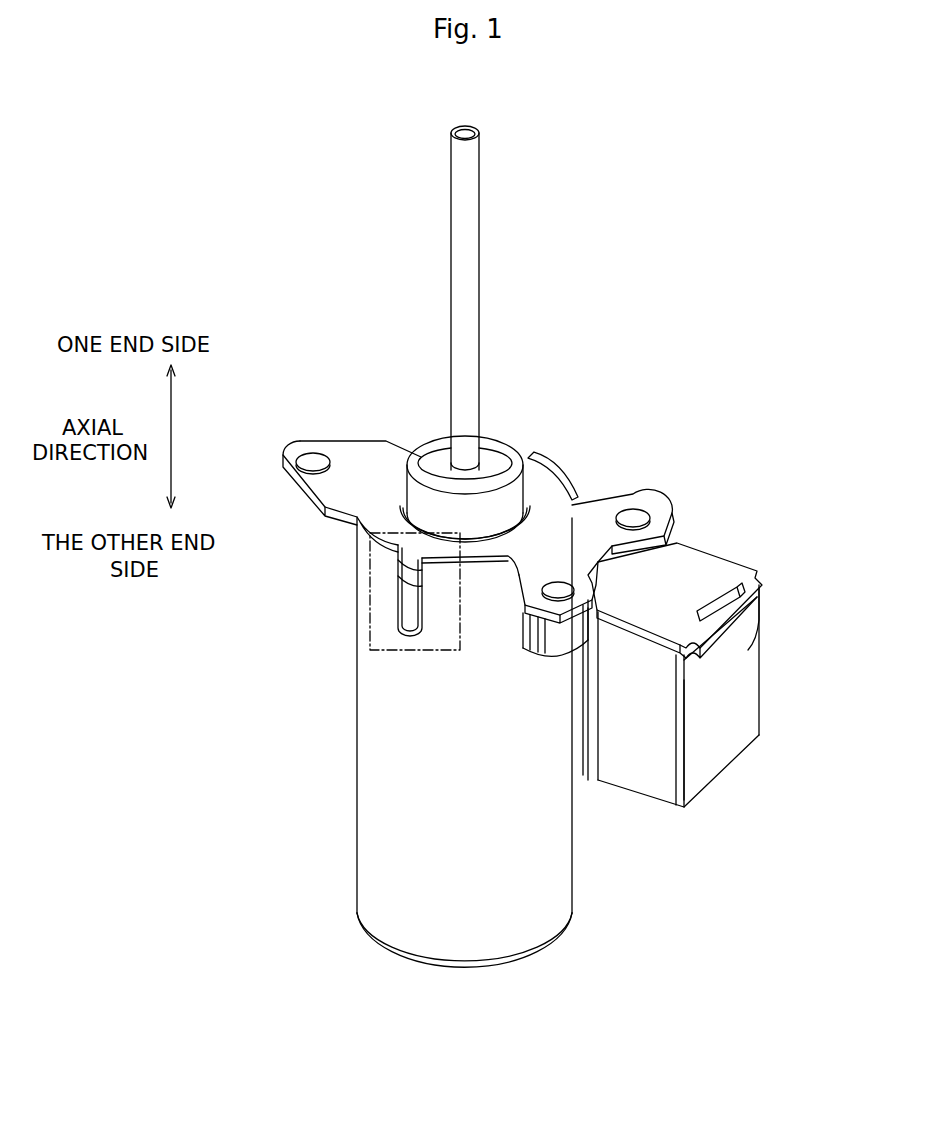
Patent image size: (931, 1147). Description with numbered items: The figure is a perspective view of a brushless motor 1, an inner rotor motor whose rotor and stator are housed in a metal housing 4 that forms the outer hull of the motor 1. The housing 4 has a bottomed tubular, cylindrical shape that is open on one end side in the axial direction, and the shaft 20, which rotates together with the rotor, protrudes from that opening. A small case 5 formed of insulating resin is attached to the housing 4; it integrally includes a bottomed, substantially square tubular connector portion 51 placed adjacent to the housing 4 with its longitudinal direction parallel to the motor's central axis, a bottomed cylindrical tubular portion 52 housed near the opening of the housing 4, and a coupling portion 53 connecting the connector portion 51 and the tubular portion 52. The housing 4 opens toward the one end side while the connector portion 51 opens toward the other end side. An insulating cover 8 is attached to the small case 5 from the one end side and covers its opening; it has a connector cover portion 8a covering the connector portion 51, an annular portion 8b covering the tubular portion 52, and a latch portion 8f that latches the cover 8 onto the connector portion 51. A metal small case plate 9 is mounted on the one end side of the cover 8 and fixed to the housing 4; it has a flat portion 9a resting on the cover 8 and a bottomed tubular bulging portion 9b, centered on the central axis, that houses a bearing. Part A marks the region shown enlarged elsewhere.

The brushless motor 1 is at (262, 184).
The shaft 20 is at (458, 223).
The small case plate 9 is at (512, 446).
The flat portion 9a is at (602, 513).
The bulging portion 9b is at (429, 453).
The cover 8 is at (707, 565).
The connector cover portion 8a is at (725, 568).
The annular portion 8b is at (397, 577).
The latch portion 8f is at (762, 620).
The small case 5 is at (762, 693).
The connector portion 51 is at (718, 765).
The tubular portion 52 is at (393, 614).
The coupling portion 53 is at (556, 648).
The housing 4 is at (368, 780).
The part A is at (420, 652).